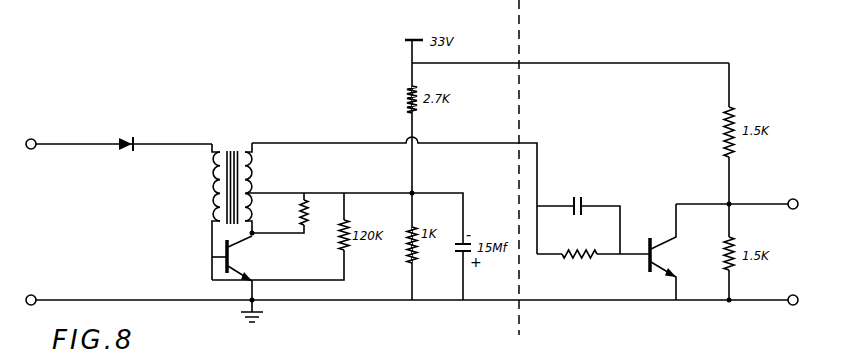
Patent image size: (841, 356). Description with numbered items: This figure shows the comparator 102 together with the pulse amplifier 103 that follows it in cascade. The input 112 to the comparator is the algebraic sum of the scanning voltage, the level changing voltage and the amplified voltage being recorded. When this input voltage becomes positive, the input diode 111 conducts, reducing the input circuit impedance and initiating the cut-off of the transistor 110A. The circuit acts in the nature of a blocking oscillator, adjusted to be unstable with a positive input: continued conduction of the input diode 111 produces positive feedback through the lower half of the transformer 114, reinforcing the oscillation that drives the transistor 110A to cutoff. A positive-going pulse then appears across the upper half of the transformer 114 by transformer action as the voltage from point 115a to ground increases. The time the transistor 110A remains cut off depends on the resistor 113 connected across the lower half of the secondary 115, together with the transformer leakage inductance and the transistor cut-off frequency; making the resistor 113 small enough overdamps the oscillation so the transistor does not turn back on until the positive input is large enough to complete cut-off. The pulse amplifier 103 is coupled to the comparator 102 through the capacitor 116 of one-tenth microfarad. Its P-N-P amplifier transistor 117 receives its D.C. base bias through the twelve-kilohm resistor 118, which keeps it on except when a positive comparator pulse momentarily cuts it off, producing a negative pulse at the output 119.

The comparator 102 is at (124, 14).
The pulse amplifier 103 is at (521, 14).
The transistor 110A is at (216, 259).
The input diode 111 is at (129, 135).
The input 112 is at (55, 147).
The resistor 113 is at (308, 213).
The transformer 114 is at (232, 151).
The secondary 115 is at (251, 179).
The point 115a is at (253, 192).
The capacitor 116 is at (585, 203).
The amplifier transistor 117 is at (649, 240).
The resistor 118 is at (597, 250).
The output 119 is at (752, 208).